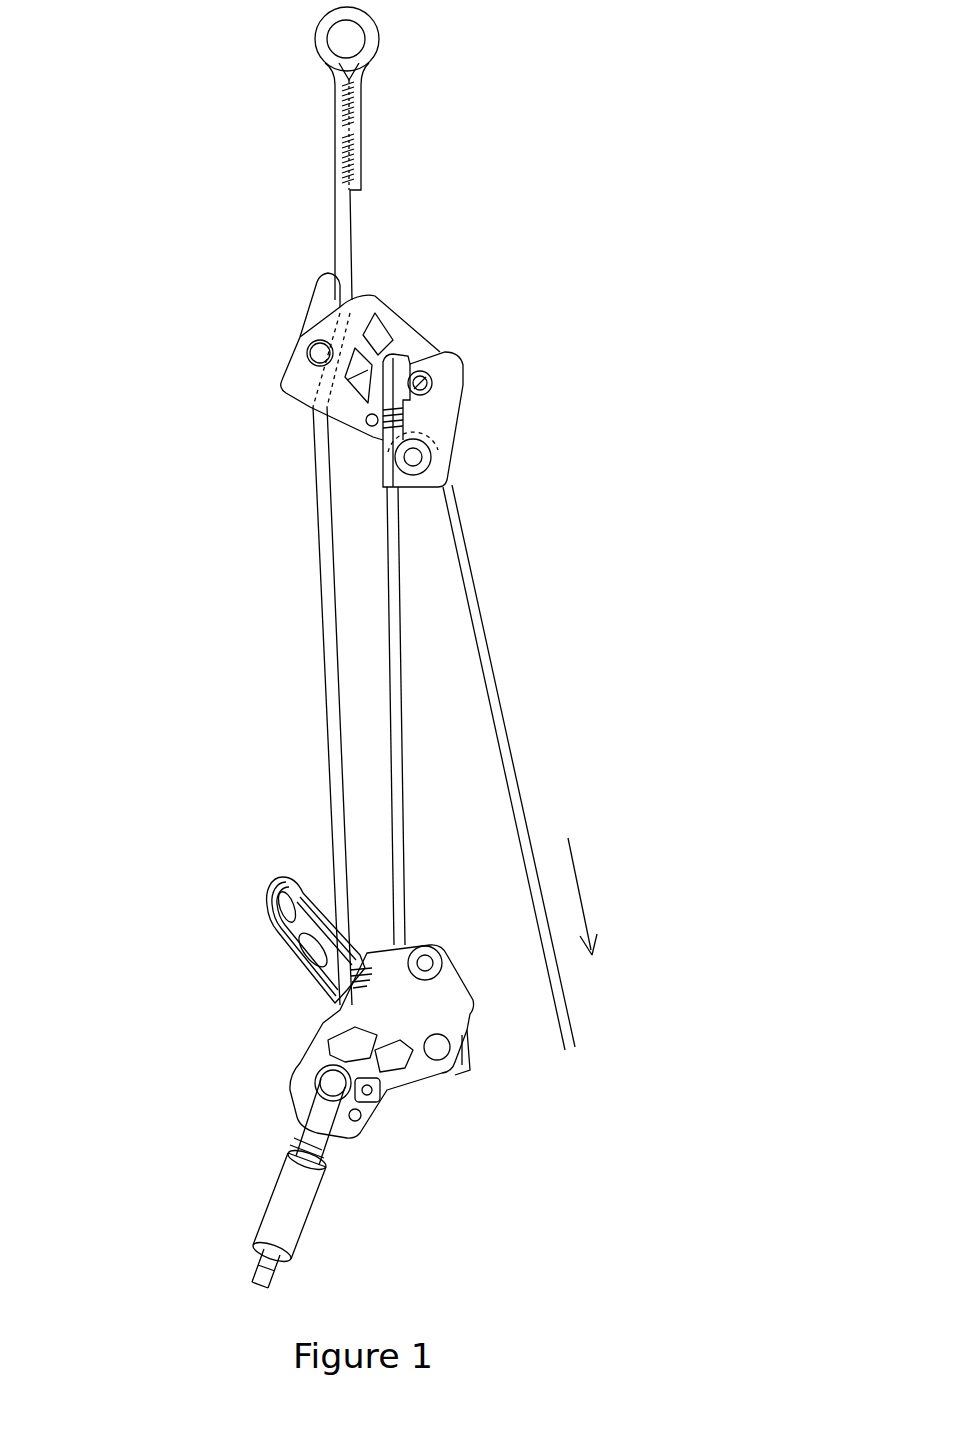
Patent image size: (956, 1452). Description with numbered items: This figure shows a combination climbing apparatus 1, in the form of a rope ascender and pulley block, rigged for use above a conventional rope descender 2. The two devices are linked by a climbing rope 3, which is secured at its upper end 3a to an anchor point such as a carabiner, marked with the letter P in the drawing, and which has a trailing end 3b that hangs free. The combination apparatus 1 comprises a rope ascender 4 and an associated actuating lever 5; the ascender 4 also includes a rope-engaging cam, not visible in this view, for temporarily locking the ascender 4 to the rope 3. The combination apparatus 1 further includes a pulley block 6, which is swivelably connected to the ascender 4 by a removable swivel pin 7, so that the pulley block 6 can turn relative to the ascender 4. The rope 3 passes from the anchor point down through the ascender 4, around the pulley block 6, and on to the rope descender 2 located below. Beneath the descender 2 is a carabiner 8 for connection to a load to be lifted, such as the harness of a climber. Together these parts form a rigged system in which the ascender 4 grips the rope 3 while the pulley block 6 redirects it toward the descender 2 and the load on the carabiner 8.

The combination climbing apparatus 1 is at (452, 364).
The rope descender 2 is at (273, 1082).
The climbing rope 3 is at (431, 528).
The upper end 3a is at (353, 217).
The trailing end 3b is at (515, 753).
The rope ascender 4 is at (407, 323).
The actuating lever 5 is at (310, 307).
The pulley block 6 is at (453, 427).
The removable swivel pin 7 is at (437, 387).
The carabiner 8 is at (317, 1200).